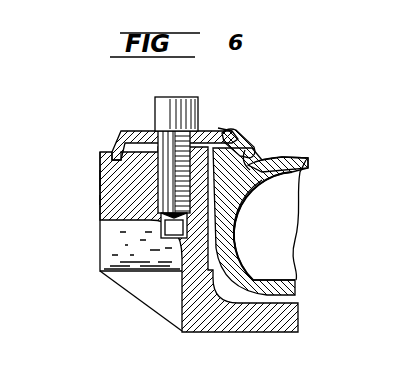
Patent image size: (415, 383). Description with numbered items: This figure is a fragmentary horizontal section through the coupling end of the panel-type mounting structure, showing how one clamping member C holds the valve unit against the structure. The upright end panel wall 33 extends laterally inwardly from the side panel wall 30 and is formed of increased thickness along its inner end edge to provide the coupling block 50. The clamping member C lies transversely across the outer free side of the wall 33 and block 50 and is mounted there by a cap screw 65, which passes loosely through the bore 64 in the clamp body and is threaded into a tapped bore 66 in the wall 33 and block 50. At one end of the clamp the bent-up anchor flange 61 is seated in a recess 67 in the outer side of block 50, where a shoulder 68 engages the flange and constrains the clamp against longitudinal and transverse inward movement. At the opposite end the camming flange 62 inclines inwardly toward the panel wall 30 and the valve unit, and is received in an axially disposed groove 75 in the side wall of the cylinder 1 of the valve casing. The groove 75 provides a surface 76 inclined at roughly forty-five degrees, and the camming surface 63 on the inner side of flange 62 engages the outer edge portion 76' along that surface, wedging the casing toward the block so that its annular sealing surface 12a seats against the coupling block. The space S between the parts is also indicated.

The cylinder 1 is at (309, 164).
The annular sealing surface 12a is at (236, 196).
The side panel wall 30 is at (208, 333).
The end panel wall 33 is at (175, 276).
The coupling block 50 is at (100, 198).
The anchor flange 61 is at (110, 148).
The camming flange 62 is at (250, 142).
The camming surface 63 is at (232, 146).
The bore 64 is at (148, 130).
The cap screw 65 is at (198, 108).
The tapped bore 66 is at (122, 228).
The recess 67 is at (100, 157).
The shoulder 68 is at (100, 178).
The groove 75 is at (276, 160).
The inclined surface 76 is at (263, 226).
The outer edge portion 76' is at (268, 148).
The clamping member C is at (222, 126).
The space S is at (236, 212).